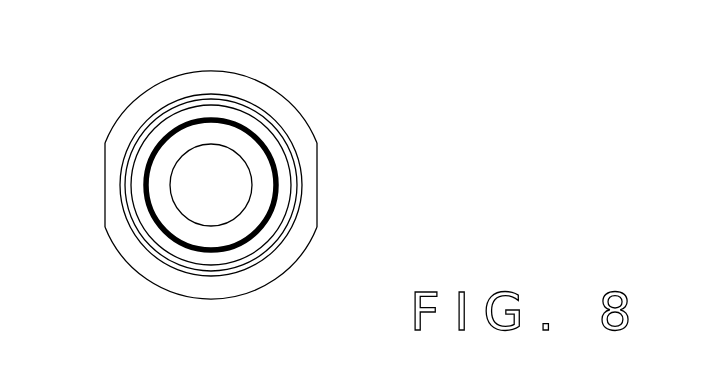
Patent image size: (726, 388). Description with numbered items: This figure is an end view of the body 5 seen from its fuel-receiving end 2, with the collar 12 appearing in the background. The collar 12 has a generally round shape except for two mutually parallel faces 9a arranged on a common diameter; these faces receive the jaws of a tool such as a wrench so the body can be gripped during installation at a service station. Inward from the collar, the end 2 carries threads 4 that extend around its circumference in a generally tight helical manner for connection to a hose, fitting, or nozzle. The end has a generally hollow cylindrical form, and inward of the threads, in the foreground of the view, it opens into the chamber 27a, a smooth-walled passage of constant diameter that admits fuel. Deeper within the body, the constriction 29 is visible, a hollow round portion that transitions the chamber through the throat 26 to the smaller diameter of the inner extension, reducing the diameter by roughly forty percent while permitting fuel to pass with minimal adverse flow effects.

The body 5 is at (73, 111).
The collar 12 is at (271, 82).
The mutually parallel faces 9a is at (103, 163).
The end 2 is at (158, 264).
The threads 4 is at (268, 242).
The constriction 29 is at (264, 203).
The chamber 27a is at (231, 163).
The throat 26 is at (223, 212).